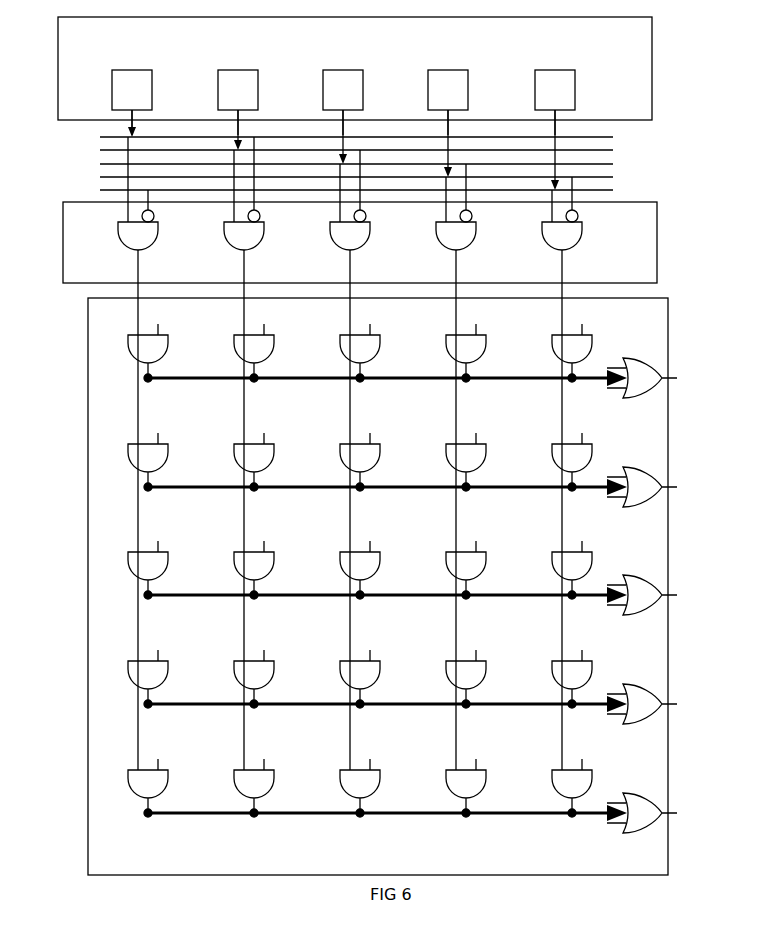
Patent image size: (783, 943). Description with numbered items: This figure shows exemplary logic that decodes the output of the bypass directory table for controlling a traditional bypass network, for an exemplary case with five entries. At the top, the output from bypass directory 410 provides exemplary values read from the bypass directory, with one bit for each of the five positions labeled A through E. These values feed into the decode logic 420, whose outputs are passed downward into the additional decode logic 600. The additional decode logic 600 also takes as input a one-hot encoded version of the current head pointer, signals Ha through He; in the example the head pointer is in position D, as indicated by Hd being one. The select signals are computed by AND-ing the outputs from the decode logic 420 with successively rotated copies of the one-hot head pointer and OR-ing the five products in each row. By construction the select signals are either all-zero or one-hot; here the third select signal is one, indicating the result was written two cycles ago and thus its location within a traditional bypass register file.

The output from bypass directory 410 is at (355, 76).
The decode logic 420 is at (360, 242).
The additional decode logic 600 is at (422, 586).